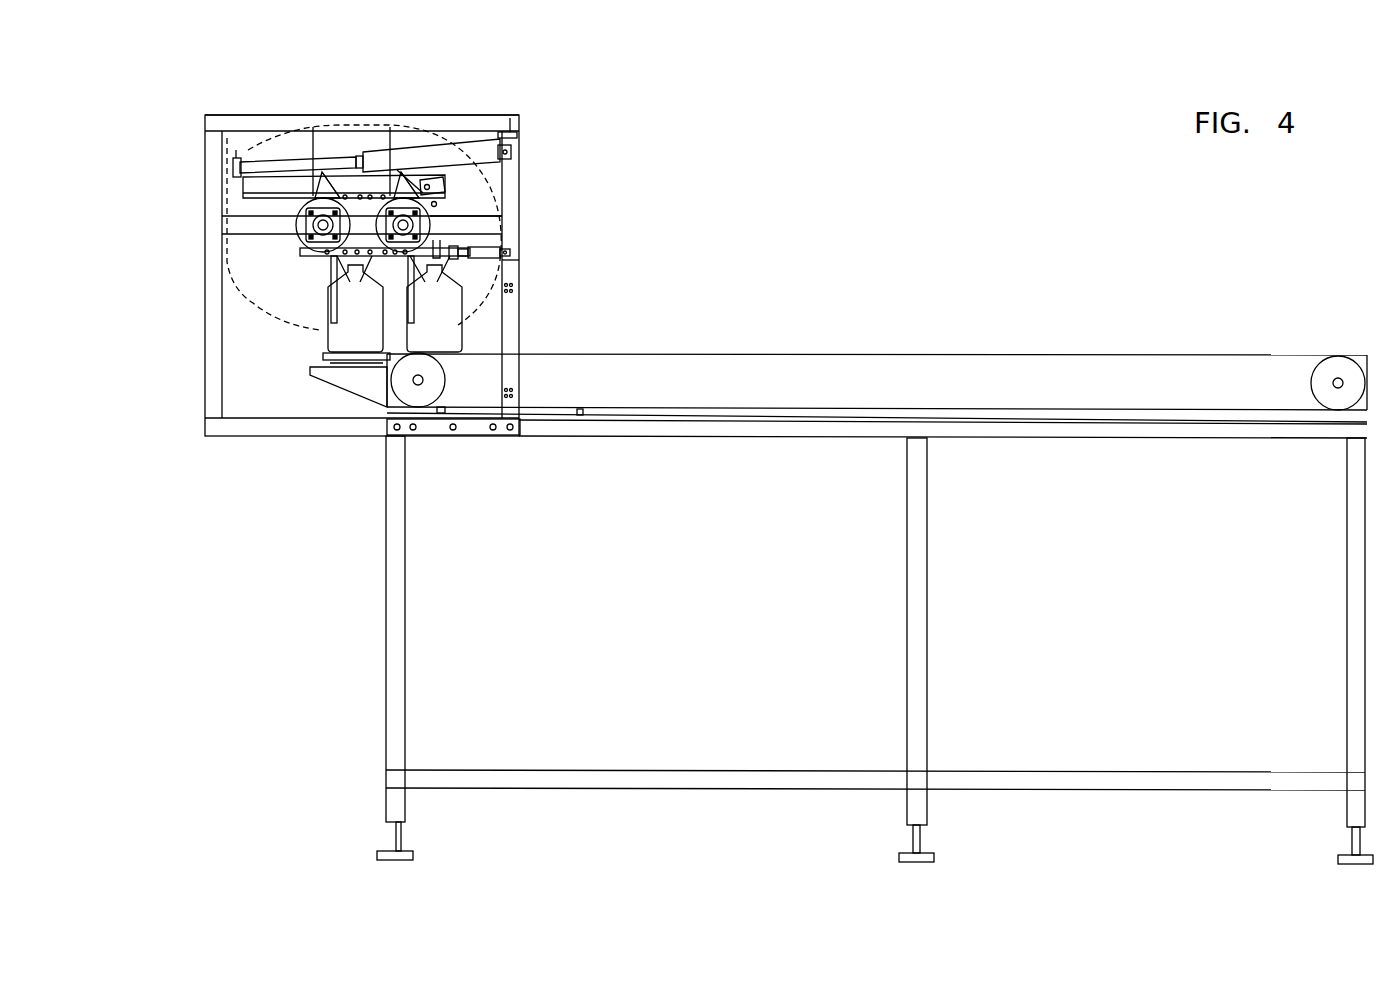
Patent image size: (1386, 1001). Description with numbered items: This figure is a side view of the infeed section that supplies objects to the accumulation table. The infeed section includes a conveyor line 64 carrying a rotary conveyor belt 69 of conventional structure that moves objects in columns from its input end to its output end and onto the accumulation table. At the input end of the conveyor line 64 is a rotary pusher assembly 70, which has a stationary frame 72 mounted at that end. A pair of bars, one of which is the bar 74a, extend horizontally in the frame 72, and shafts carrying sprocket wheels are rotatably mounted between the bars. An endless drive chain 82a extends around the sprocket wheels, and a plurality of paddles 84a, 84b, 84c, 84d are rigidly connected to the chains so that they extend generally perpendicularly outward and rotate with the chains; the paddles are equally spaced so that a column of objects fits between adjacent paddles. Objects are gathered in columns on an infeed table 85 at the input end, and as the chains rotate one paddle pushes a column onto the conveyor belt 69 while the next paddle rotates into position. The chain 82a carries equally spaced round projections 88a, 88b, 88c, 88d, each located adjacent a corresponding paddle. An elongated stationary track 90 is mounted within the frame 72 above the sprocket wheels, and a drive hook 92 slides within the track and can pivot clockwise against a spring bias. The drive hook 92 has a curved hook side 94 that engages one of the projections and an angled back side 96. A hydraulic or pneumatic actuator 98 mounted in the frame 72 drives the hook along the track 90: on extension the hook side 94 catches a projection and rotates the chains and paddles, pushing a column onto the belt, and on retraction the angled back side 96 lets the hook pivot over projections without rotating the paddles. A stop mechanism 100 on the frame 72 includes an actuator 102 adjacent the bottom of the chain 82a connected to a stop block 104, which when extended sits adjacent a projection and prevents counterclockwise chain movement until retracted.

The conveyor line 64 is at (877, 333).
The rotary conveyor belt 69 is at (818, 352).
The rotary pusher assembly 70 is at (190, 222).
The stationary frame 72 is at (207, 382).
The bar 74a is at (238, 228).
The endless drive chain 82a is at (350, 176).
The paddle 84a is at (328, 298).
The paddle 84b is at (410, 312).
The paddle 84c is at (390, 128).
The paddle 84d is at (313, 127).
The infeed table 85 is at (323, 351).
The round projection 88a is at (330, 262).
The round projection 88b is at (403, 254).
The round projection 88c is at (427, 176).
The round projection 88d is at (315, 204).
The stationary track 90 is at (257, 185).
The drive hook 92 is at (440, 192).
The hook side 94 is at (438, 209).
The angled back side 96 is at (436, 206).
The actuator 98 is at (487, 152).
The stop mechanism 100 is at (557, 281).
The actuator 102 is at (500, 252).
The stop block 104 is at (453, 259).